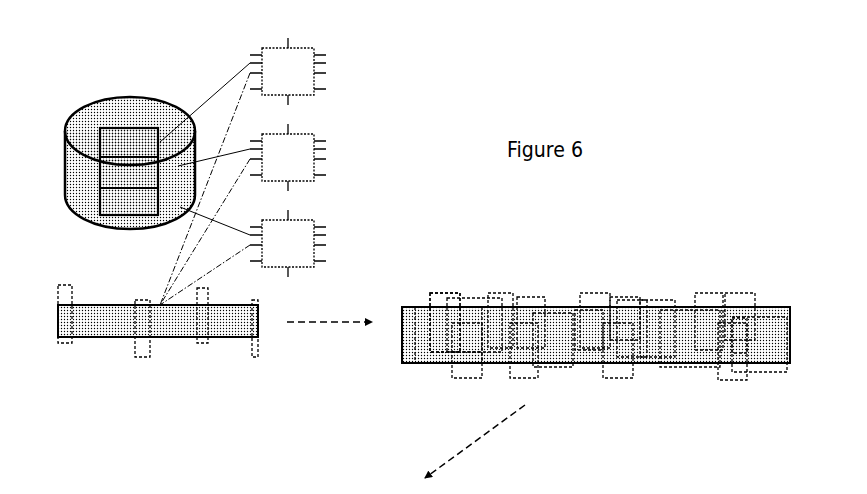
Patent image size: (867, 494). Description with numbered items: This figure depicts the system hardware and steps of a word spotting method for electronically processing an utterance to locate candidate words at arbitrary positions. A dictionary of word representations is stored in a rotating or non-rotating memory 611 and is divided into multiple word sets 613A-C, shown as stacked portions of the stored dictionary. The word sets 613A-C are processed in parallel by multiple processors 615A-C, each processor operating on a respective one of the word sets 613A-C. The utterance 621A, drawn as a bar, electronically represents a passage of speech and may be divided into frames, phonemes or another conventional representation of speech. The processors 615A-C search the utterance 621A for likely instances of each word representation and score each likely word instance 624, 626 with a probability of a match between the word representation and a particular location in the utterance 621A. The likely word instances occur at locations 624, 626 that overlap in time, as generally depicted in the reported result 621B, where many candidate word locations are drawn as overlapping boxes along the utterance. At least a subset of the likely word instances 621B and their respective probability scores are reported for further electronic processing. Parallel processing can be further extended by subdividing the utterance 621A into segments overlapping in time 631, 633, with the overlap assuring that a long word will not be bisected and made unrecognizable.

The memory 611 is at (118, 97).
The word sets 613A-C is at (143, 205).
The processors 615A-C is at (302, 47).
The utterance 621A is at (224, 338).
The likely word instances overlapping in time 621B is at (647, 406).
The candidate word location 624 is at (447, 293).
The candidate word location 626 is at (663, 300).
The overlapping utterance segment 631 is at (64, 343).
The overlapping utterance segment 633 is at (147, 358).